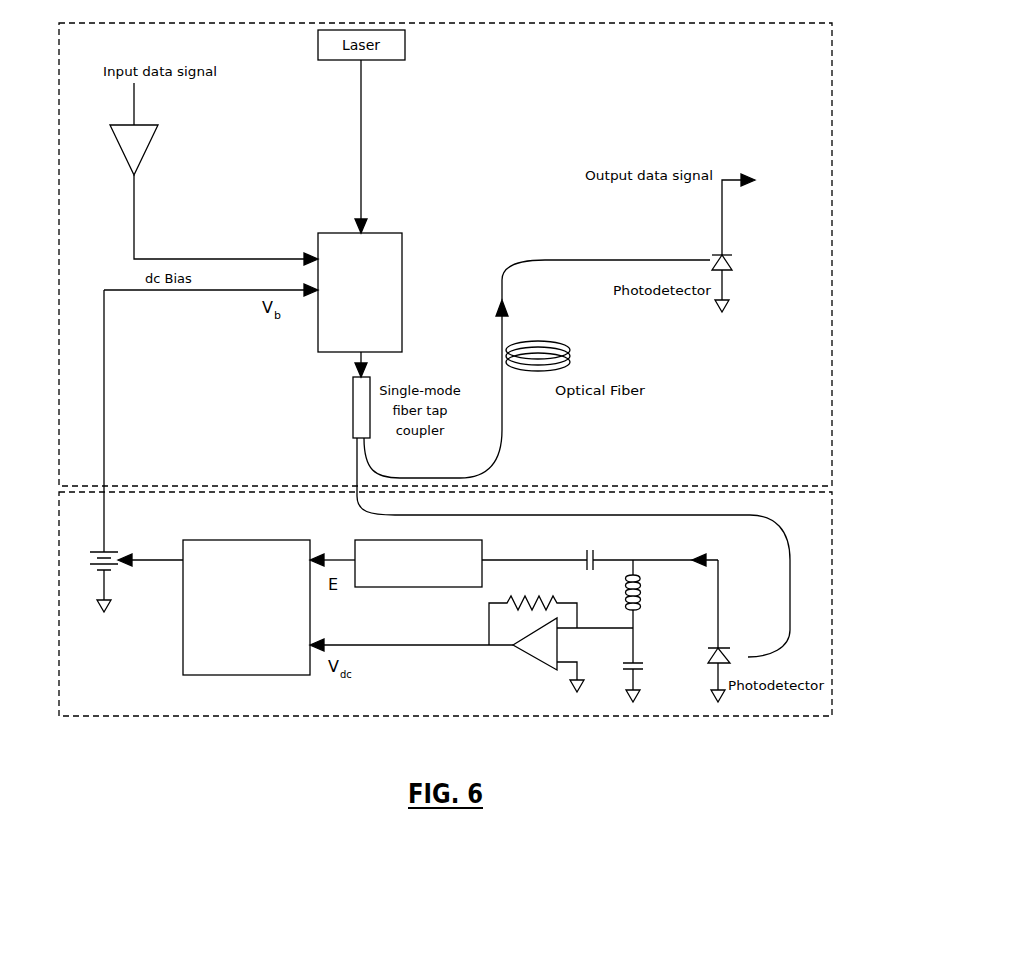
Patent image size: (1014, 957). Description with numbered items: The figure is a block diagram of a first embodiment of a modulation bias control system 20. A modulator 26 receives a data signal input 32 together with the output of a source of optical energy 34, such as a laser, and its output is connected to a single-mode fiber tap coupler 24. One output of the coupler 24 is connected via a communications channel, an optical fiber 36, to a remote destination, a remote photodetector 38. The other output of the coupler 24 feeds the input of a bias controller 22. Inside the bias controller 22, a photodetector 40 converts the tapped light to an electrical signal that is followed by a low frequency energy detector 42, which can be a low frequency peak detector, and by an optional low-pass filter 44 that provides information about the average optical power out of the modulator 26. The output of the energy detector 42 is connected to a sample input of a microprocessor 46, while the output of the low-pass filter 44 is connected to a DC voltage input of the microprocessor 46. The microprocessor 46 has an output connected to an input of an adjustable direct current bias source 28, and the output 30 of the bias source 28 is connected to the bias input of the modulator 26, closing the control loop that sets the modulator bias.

The modulation bias control system 20 is at (756, 798).
The bias controller 22 is at (59, 513).
The single-mode fiber tap coupler 24 is at (355, 410).
The modulator 26 is at (398, 234).
The adjustable direct current (DC) bias source 28 is at (112, 556).
The output of the bias source 30 is at (200, 290).
The data signal input 32 is at (200, 259).
The source of optical energy 34 is at (361, 123).
The optical fiber 36 is at (565, 345).
The remote photodetector 38 is at (728, 253).
The photodetector 40 is at (712, 648).
The low frequency energy detector 42 is at (482, 546).
The low-pass filter 44 is at (504, 661).
The microprocessor 46 is at (272, 540).